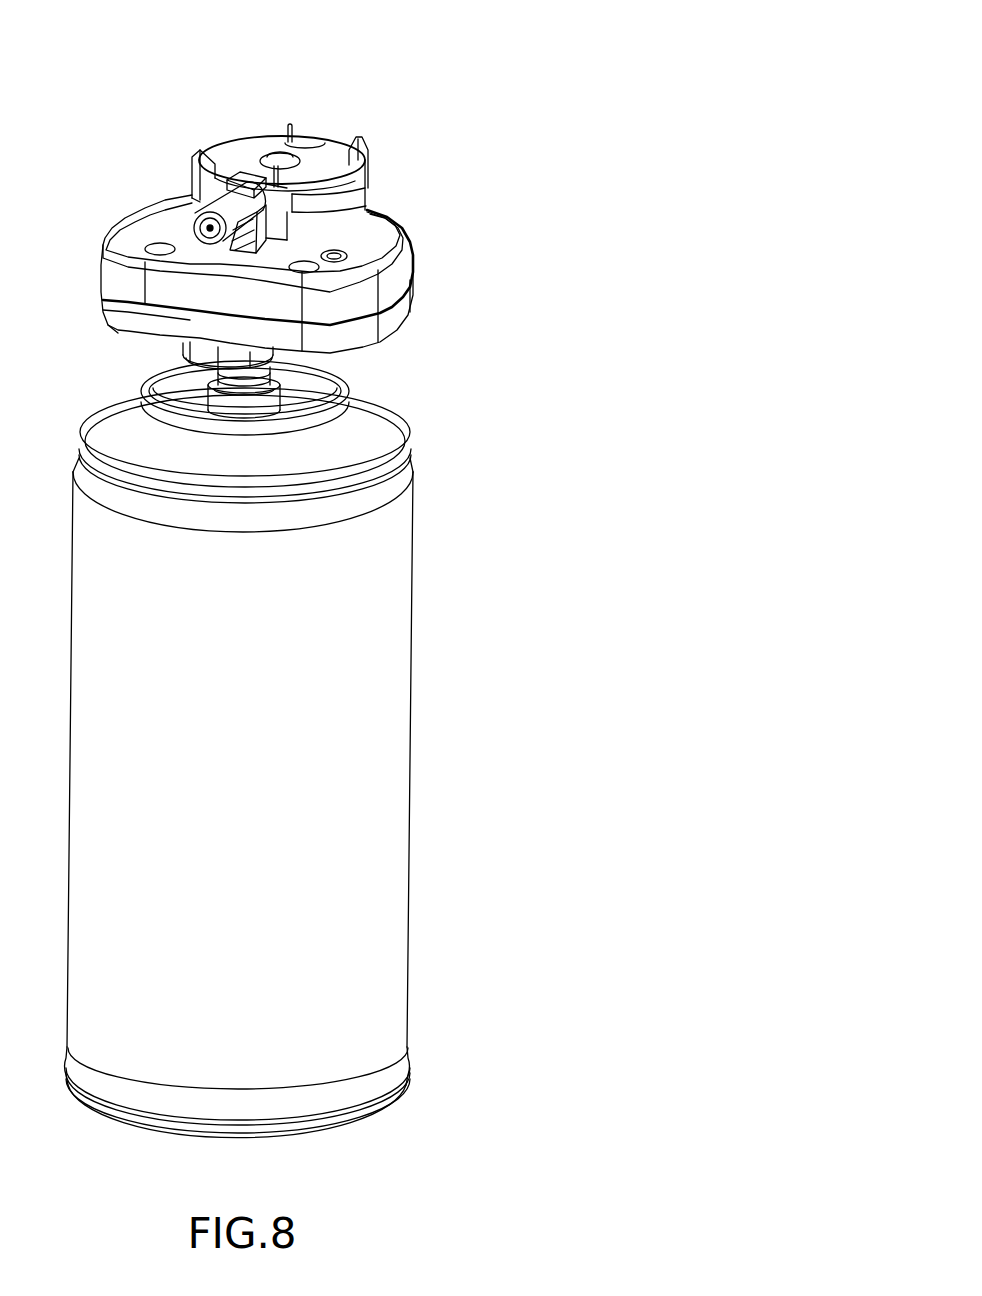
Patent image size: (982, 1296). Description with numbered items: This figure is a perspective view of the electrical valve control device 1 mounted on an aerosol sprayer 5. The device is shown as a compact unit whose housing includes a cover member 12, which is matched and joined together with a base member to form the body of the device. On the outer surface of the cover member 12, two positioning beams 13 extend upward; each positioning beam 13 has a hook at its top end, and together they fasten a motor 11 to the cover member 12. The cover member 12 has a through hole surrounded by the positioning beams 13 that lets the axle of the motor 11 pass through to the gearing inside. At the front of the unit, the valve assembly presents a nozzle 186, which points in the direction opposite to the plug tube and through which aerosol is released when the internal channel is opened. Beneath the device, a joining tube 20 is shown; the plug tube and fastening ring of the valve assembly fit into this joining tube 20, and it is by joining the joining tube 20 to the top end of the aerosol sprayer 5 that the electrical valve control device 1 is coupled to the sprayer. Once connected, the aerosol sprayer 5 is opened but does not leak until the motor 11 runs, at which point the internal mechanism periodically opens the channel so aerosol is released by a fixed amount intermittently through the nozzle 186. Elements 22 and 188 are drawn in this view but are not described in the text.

The electrical valve control device 1 is at (518, 97).
The aerosol sprayer 5 is at (367, 752).
The motor 11 is at (250, 152).
The cover member 12 is at (162, 218).
The positioning beam 13 is at (362, 133).
The joining tube 20 is at (235, 375).
The lower rim of cap 22 is at (400, 312).
The nozzle 186 is at (245, 230).
The nozzle 188 is at (268, 203).